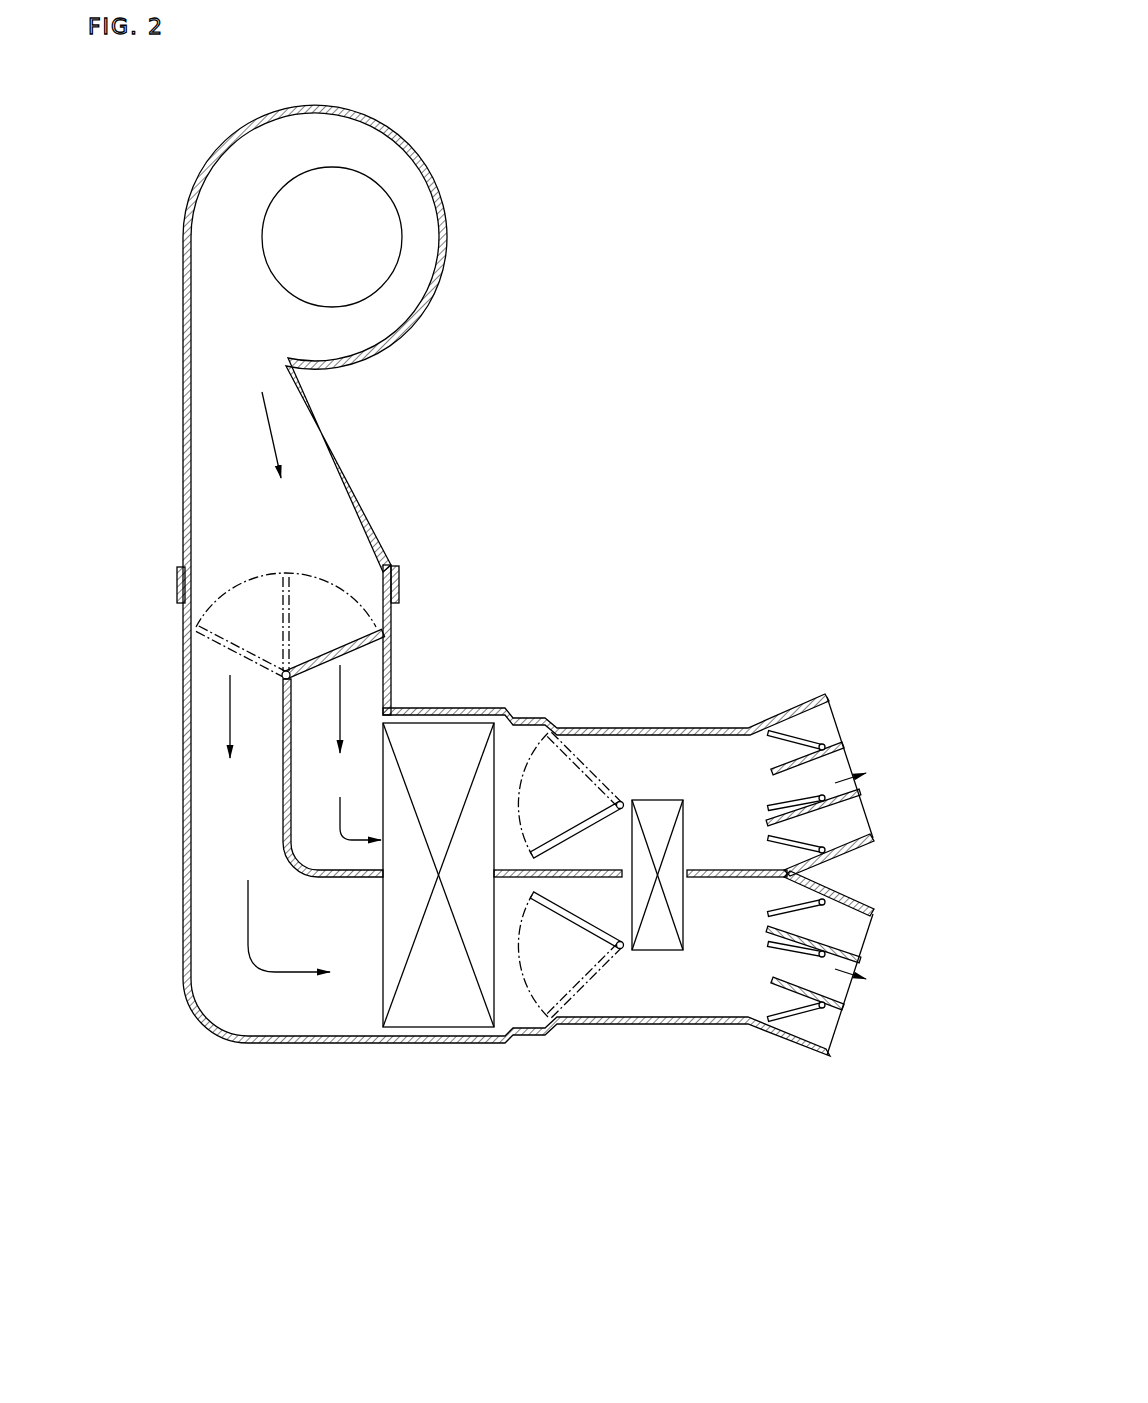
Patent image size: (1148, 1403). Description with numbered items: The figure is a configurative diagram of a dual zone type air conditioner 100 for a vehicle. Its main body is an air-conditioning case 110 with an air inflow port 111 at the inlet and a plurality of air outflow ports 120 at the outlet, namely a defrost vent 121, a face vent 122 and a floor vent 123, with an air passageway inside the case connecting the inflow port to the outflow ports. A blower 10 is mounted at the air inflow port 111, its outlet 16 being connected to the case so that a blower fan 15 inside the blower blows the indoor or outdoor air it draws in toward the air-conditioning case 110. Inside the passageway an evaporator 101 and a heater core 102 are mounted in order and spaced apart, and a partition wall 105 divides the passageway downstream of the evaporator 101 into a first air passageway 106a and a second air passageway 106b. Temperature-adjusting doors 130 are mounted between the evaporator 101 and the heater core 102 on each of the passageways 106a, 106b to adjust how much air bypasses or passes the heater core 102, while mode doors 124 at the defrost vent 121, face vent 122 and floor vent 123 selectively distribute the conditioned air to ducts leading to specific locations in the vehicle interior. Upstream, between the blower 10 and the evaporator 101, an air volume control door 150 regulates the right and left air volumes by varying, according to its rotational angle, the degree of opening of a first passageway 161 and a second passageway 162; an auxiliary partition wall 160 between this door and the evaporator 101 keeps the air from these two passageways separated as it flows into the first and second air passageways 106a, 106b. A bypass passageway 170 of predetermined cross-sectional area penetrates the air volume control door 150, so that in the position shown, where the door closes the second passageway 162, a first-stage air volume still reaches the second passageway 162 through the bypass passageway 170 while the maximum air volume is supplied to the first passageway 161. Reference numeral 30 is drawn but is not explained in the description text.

The blower 10 is at (449, 187).
The blower fan 15 is at (402, 235).
The outlet of the blower 16 is at (177, 586).
The partition wall 30 is at (720, 878).
The dual zone type air conditioner 100 is at (665, 667).
The evaporator 101 is at (430, 1020).
The heater core 102 is at (655, 948).
The partition wall 105 is at (510, 878).
The first air passageway 106a is at (616, 1003).
The second air passageway 106b is at (596, 899).
The air-conditioning case 110 is at (600, 728).
The air inflow port 111 is at (392, 652).
The air outflow ports 120 is at (817, 873).
The defrost vent 121 is at (795, 738).
The face vent 122 is at (850, 760).
The floor vent 123 is at (878, 752).
The mode doors 124 is at (768, 838).
The temperature-adjusting doors 130 is at (588, 825).
The air volume control door 150 is at (392, 630).
The auxiliary partition wall 160 is at (283, 798).
The first passageway 161 is at (238, 721).
The second passageway 162 is at (334, 721).
The bypass passageway 170 is at (399, 590).